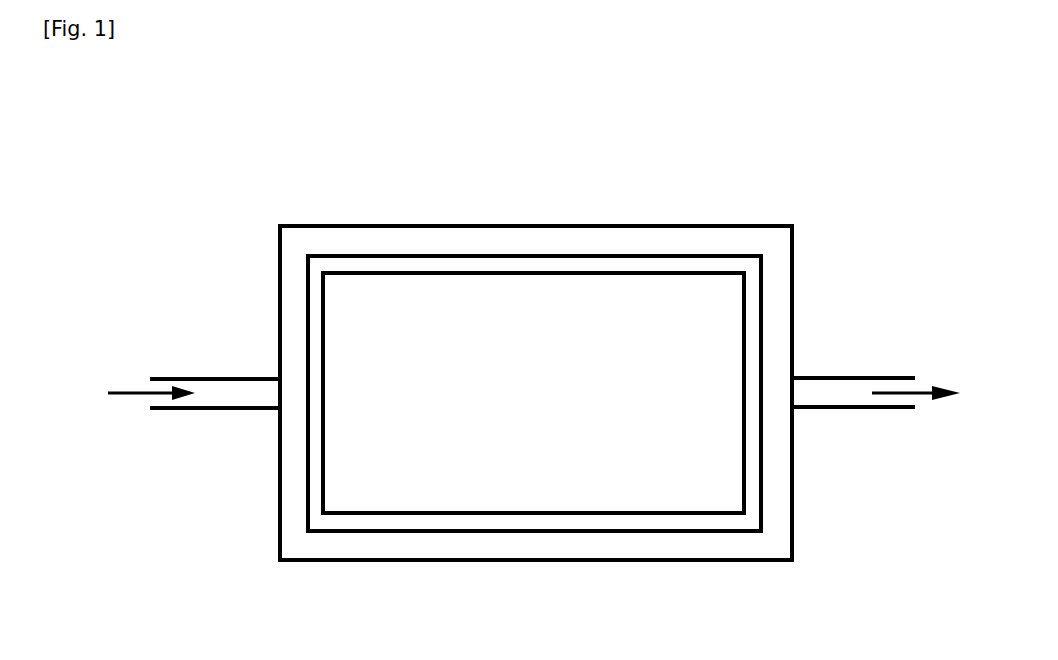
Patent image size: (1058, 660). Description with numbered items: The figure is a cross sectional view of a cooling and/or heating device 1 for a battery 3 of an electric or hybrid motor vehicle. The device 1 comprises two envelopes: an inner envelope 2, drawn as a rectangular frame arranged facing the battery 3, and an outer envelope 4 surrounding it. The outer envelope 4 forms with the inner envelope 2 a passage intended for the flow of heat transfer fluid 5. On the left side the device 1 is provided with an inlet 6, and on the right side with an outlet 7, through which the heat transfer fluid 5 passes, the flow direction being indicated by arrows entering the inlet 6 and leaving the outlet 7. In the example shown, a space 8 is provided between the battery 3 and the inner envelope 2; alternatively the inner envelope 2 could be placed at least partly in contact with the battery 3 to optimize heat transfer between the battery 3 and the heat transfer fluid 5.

The cooling and/or heating device 1 is at (378, 222).
The inner envelope 2 is at (560, 256).
The battery 3 is at (657, 272).
The outer envelope 4 is at (447, 226).
The heat transfer fluid 5 is at (143, 393).
The inlet 6 is at (228, 379).
The outlet 7 is at (860, 378).
The space 8 is at (725, 263).